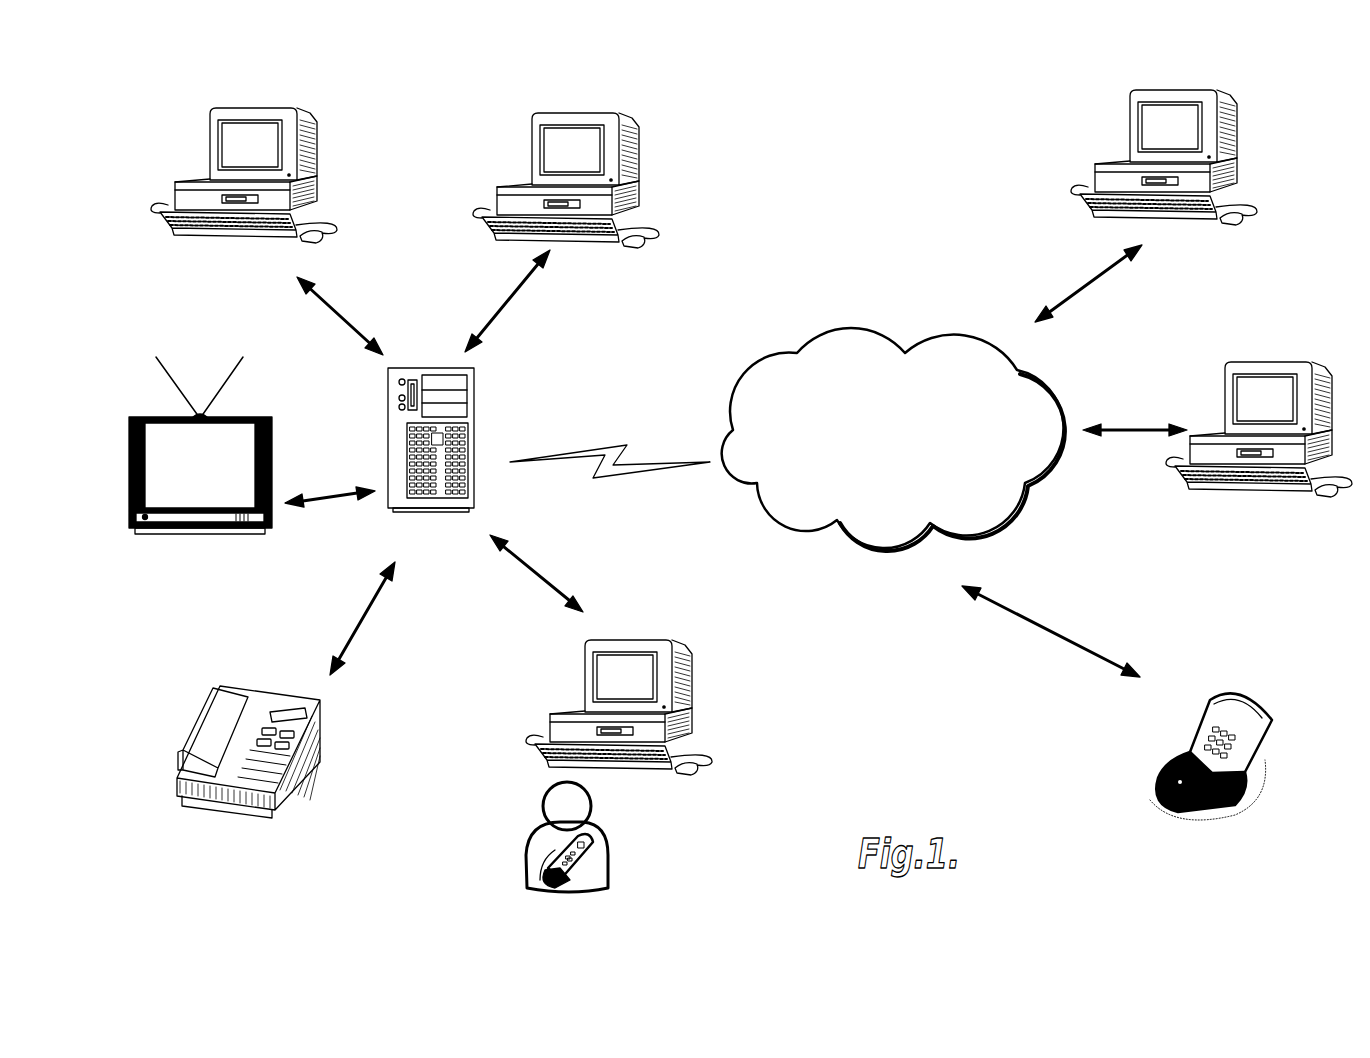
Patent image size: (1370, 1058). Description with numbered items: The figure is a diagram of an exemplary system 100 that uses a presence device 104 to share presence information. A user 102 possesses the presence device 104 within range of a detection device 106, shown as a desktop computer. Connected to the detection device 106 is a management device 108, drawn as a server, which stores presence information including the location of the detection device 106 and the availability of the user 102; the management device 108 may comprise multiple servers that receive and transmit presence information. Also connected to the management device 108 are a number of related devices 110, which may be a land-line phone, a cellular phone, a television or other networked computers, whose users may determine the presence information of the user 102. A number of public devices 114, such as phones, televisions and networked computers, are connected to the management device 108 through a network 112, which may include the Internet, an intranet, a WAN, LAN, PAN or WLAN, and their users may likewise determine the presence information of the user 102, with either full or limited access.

The system 100 is at (868, 167).
The user 102 is at (530, 837).
The presence device 104 is at (587, 862).
The detection device 106 is at (688, 696).
The management device 108 is at (475, 433).
The related devices 110 is at (260, 237).
The network 112 is at (887, 547).
The public devices 114 is at (1237, 148).